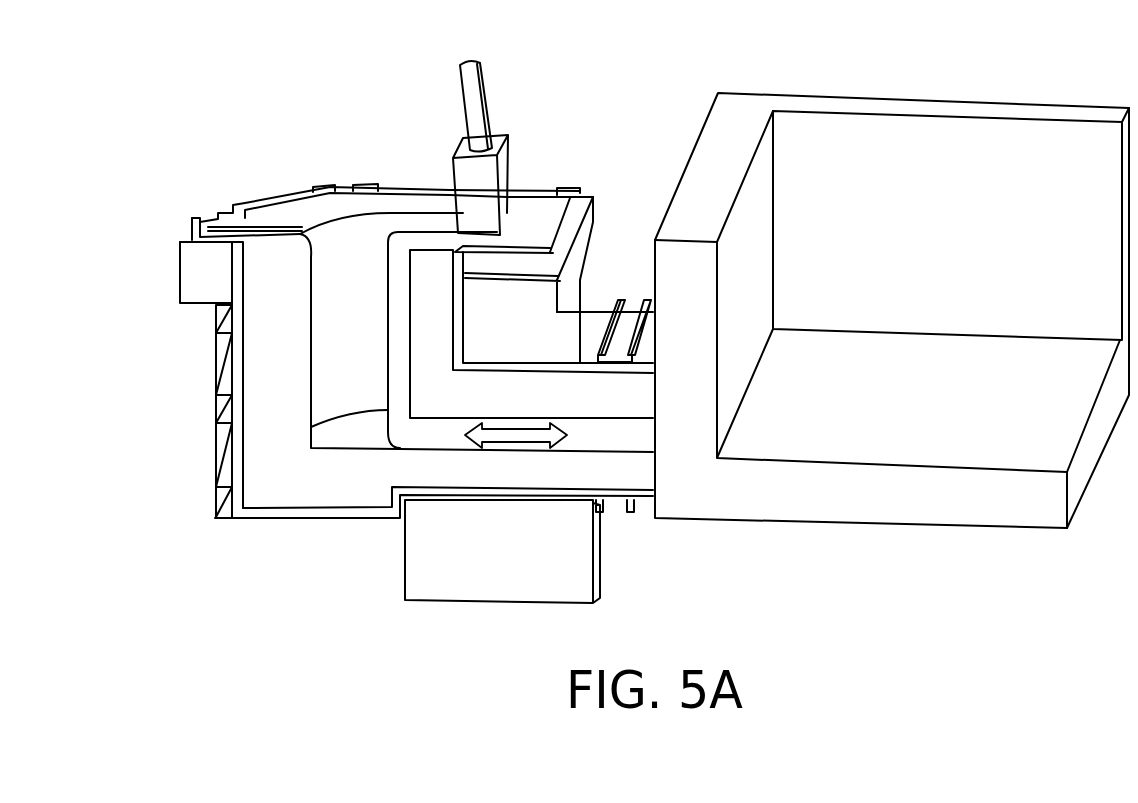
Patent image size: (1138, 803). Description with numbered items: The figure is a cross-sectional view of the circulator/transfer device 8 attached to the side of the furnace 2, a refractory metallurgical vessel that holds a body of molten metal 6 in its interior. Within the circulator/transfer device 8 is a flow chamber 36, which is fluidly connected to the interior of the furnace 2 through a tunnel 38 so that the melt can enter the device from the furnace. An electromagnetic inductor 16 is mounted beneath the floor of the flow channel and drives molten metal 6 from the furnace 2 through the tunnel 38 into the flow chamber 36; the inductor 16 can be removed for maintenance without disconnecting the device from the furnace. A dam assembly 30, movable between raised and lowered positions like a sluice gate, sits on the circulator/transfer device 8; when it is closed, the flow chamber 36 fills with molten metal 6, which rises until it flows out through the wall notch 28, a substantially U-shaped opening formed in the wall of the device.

The furnace 2 is at (892, 279).
The molten metal 6 is at (941, 303).
The circulator/transfer device 8 is at (362, 306).
The electromagnetic inductor 16 is at (478, 588).
The wall notch 28 is at (182, 234).
The dam assembly 30 is at (495, 88).
The flow chamber 36 is at (356, 294).
The tunnel 38 is at (621, 436).